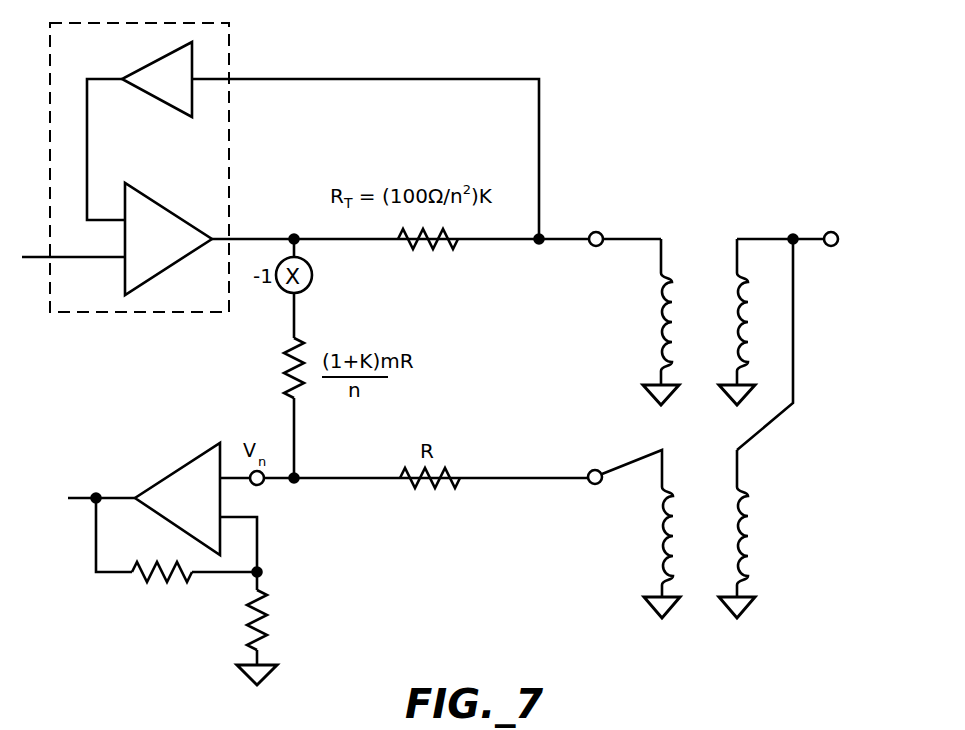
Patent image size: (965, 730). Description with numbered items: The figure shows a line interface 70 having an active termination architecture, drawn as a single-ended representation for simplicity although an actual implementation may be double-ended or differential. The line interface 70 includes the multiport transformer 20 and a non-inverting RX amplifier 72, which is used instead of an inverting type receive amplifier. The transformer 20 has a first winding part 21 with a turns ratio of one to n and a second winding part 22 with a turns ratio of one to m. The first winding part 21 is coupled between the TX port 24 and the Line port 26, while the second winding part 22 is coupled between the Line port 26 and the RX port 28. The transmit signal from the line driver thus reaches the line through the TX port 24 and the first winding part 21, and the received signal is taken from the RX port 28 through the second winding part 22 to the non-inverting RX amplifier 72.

The line interface 70 is at (528, 52).
The transformer 20 is at (721, 397).
The first winding part 21 is at (752, 321).
The second winding part 22 is at (754, 534).
The TX port 24 is at (598, 231).
The Line port 26 is at (838, 244).
The RX port 28 is at (592, 486).
The non-inverting RX amplifier 72 is at (281, 553).